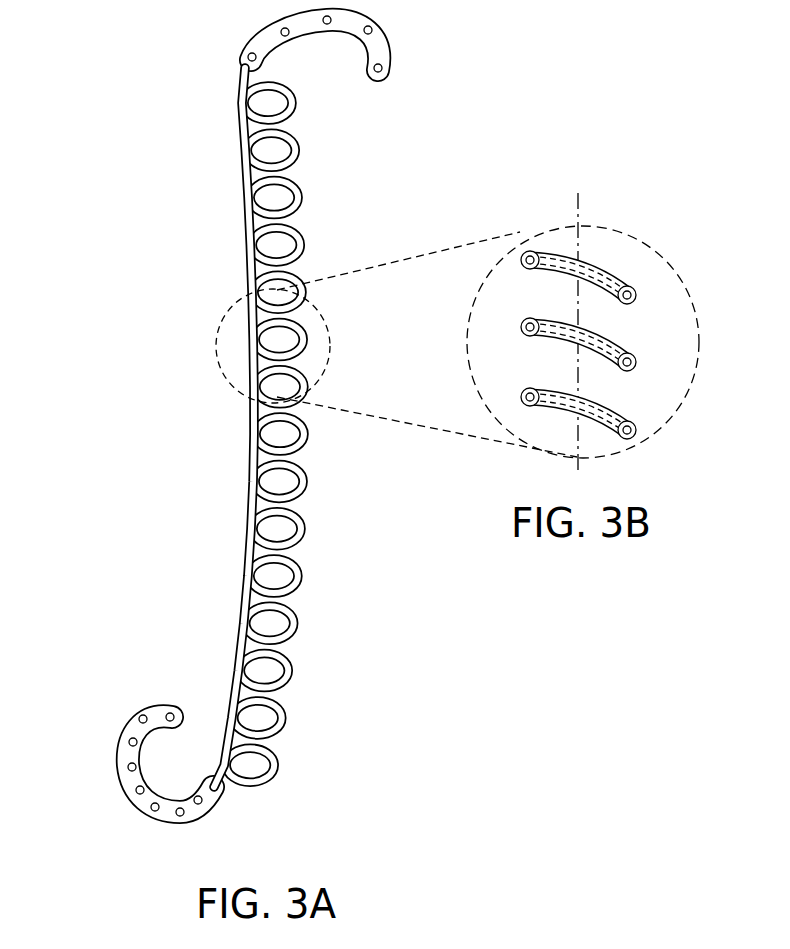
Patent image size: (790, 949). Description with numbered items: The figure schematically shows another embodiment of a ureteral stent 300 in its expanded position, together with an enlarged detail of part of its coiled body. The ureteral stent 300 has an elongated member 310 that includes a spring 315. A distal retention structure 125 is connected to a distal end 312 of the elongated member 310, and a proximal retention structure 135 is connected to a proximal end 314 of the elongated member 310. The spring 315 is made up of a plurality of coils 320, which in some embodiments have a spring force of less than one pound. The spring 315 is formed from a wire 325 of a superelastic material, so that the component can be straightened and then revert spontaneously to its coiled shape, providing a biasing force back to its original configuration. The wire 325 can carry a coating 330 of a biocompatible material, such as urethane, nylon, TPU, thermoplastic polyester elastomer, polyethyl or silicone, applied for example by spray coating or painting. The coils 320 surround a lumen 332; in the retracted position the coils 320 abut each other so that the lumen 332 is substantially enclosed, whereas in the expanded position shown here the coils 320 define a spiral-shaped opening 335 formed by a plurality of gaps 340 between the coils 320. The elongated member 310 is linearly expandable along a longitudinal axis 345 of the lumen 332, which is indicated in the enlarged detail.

In FIG. 3A, the ureteral stent 300 is at (252, 417).
In FIG. 3A, the distal retention structure 125 is at (392, 52).
In FIG. 3A, the proximal retention structure 135 is at (117, 758).
In FIG. 3A, the elongated member 310 is at (274, 433).
In FIG. 3A, the distal end 312 is at (246, 70).
In FIG. 3A, the proximal end 314 is at (220, 796).
In FIG. 3A, the spring 315 is at (303, 196).
In FIG. 3A, the coils 320 is at (298, 620).
In FIG. 3A, the spiral-shaped opening 335 is at (296, 458).
In FIG. 3A, the gaps 340 is at (263, 743).
In FIG. 3B, the wire 325 is at (636, 360).
In FIG. 3B, the coating 330 is at (600, 268).
In FIG. 3B, the lumen 332 is at (552, 298).
In FIG. 3B, the longitudinal axis 345 is at (582, 207).